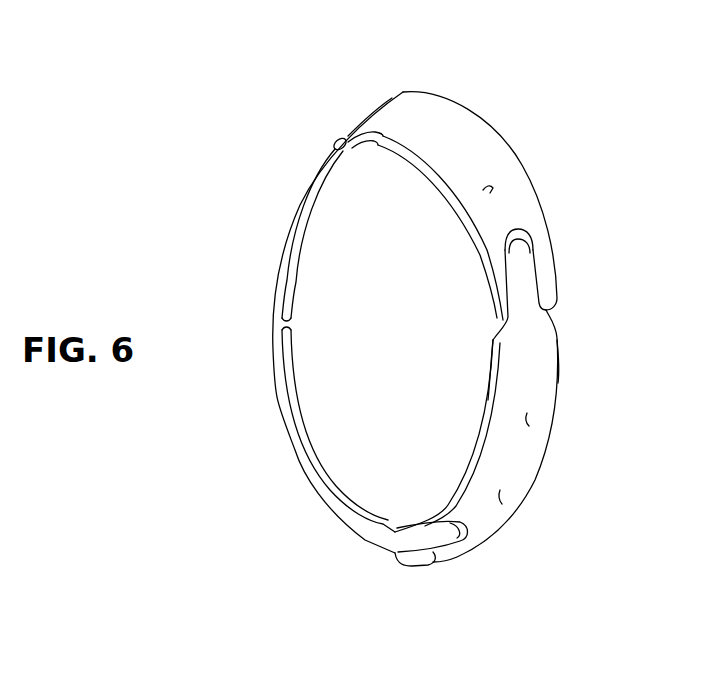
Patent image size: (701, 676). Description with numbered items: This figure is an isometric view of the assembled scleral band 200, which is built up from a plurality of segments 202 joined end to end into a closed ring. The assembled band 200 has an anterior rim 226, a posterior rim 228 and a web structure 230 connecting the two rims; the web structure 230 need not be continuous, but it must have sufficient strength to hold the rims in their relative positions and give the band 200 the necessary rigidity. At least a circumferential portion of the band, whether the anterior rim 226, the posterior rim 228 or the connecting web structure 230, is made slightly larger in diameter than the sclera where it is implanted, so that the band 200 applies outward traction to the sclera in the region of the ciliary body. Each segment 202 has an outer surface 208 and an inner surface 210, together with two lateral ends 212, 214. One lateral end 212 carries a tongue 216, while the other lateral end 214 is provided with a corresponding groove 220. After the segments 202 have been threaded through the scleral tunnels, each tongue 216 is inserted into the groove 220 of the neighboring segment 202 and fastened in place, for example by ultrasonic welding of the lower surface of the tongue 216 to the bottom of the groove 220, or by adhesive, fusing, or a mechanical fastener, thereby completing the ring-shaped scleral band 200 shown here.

The scleral band 200 is at (524, 106).
The segment 202 is at (298, 193).
The outer surface 208 is at (485, 195).
The inner surface 210 is at (287, 290).
The lateral end 212 is at (398, 92).
The lateral end 214 is at (385, 98).
The tongue 216 is at (358, 142).
The groove 220 is at (333, 140).
The anterior rim 226 is at (490, 363).
The posterior rim 228 is at (558, 383).
The web structure 230 is at (500, 497).